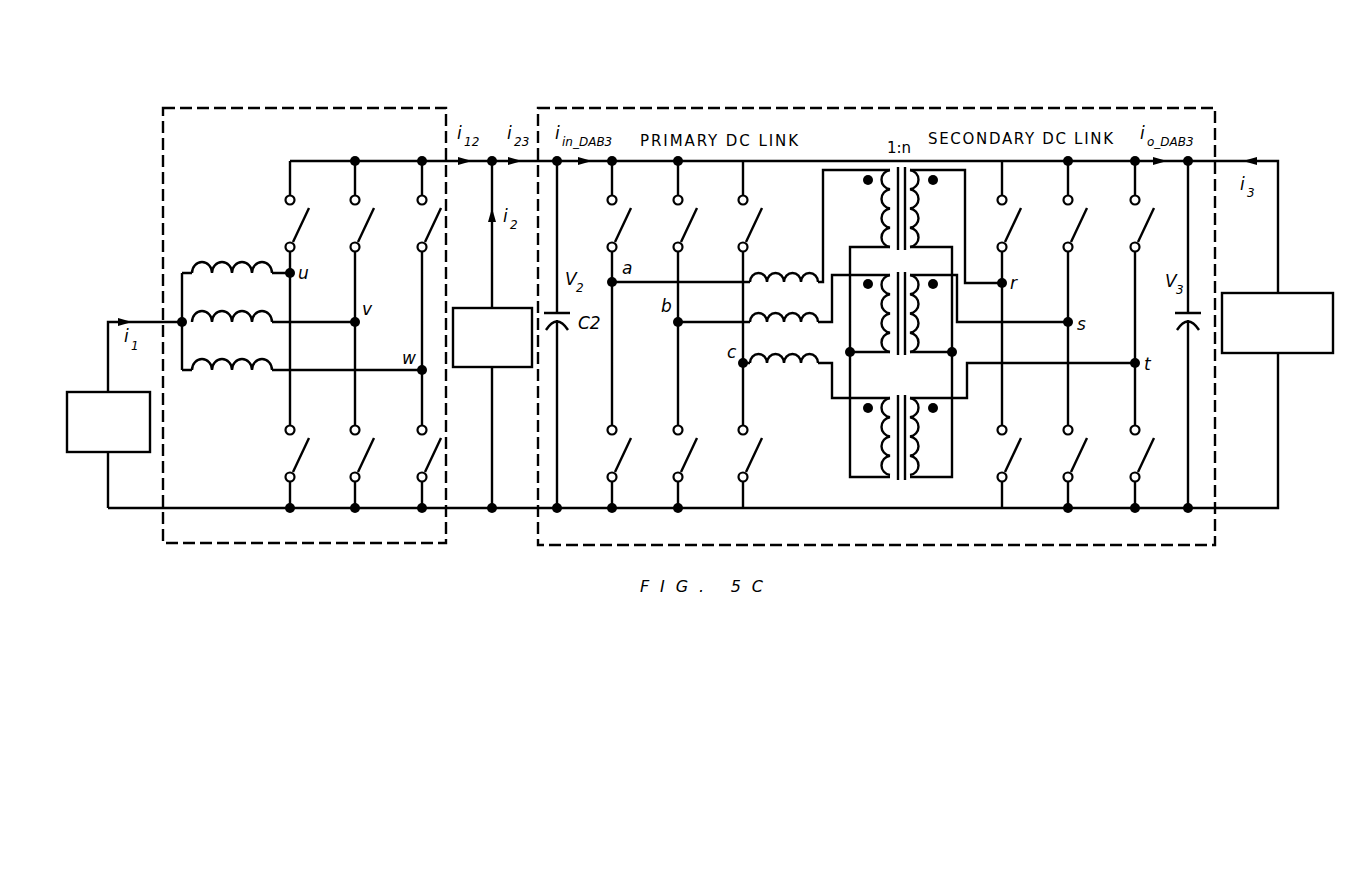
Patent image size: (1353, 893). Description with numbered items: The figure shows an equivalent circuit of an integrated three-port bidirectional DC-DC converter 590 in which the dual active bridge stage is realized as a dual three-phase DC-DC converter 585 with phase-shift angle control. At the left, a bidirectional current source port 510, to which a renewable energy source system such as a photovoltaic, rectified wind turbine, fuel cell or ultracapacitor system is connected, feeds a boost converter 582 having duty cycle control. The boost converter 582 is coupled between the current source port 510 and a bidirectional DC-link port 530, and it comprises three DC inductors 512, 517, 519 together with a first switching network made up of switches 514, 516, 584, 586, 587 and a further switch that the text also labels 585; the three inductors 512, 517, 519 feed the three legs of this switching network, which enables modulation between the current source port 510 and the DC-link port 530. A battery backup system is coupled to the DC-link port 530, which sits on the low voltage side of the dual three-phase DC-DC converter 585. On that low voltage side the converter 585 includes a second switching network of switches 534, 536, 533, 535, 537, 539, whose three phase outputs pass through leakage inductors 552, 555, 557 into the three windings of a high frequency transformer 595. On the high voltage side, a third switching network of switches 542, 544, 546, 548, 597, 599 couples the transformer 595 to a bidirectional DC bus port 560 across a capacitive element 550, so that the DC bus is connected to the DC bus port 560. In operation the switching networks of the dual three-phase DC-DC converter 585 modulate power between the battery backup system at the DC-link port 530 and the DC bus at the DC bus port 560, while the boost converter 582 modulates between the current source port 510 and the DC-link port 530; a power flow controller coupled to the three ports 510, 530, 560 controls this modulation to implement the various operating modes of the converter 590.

The integrated three-port bidirectional DC-DC converter 590 is at (198, 19).
The boost converter 582 is at (163, 150).
The dual three-phase DC-DC converter 585 is at (1158, 107).
The DC inductor 512 is at (185, 266).
The DC inductor 517 is at (186, 318).
The DC inductor 519 is at (250, 373).
The first switching network switch 514 is at (308, 213).
The first switching network switch 584 is at (373, 213).
The first switching network switch 516 is at (305, 455).
The first switching network switch 586 is at (370, 455).
The first switching network switch 587 is at (433, 464).
The bidirectional current source port 510 is at (80, 392).
The bidirectional DC-link port 530 is at (518, 308).
The bidirectional DC bus port 560 is at (1312, 293).
The second switching network switch 534 is at (630, 213).
The second switching network switch 533 is at (696, 213).
The second switching network switch 537 is at (761, 213).
The second switching network switch 536 is at (627, 455).
The second switching network switch 535 is at (693, 455).
The second switching network switch 539 is at (758, 446).
The leakage inductor 552 is at (800, 275).
The leakage inductor 555 is at (760, 316).
The leakage inductor 557 is at (808, 372).
The high frequency transformer 595 is at (882, 151).
The third switching network switch 542 is at (1021, 213).
The third switching network switch 546 is at (1087, 213).
The third switching network switch 597 is at (1154, 213).
The third switching network switch 544 is at (1017, 455).
The third switching network switch 548 is at (1083, 455).
The third switching network switch 599 is at (1150, 455).
The capacitive element 550 is at (1172, 310).